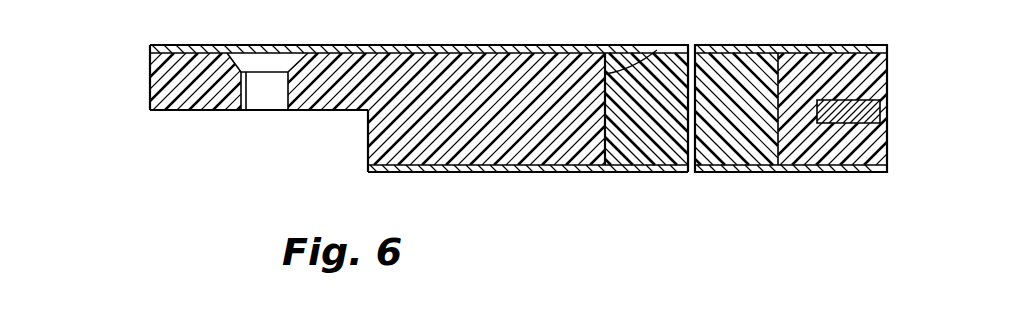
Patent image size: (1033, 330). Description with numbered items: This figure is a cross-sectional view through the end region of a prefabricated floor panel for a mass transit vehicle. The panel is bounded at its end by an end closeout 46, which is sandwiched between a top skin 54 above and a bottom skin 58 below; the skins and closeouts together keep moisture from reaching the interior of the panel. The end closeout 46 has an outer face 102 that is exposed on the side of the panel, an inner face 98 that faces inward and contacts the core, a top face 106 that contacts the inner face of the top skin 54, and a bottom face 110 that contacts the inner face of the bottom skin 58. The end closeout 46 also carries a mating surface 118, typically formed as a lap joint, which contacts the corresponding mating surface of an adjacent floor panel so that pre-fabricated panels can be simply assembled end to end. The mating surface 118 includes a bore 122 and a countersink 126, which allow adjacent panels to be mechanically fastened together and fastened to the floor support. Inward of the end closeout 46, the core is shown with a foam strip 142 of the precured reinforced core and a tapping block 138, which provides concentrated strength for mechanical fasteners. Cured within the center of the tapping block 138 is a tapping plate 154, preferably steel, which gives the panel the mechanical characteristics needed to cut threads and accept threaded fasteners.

The end closeout 46 is at (373, 153).
The top skin 54 is at (590, 46).
The bottom skin 58 is at (543, 173).
The inner face 98 is at (657, 47).
The outer face 102 is at (150, 76).
The top face 106 is at (438, 47).
The bottom face 110 is at (463, 174).
The mating surface 118 is at (192, 113).
The bore 122 is at (252, 113).
The countersink 126 is at (242, 46).
The tapping block 138 is at (840, 172).
The foam strip 142 is at (657, 147).
The tapping plate 154 is at (840, 100).